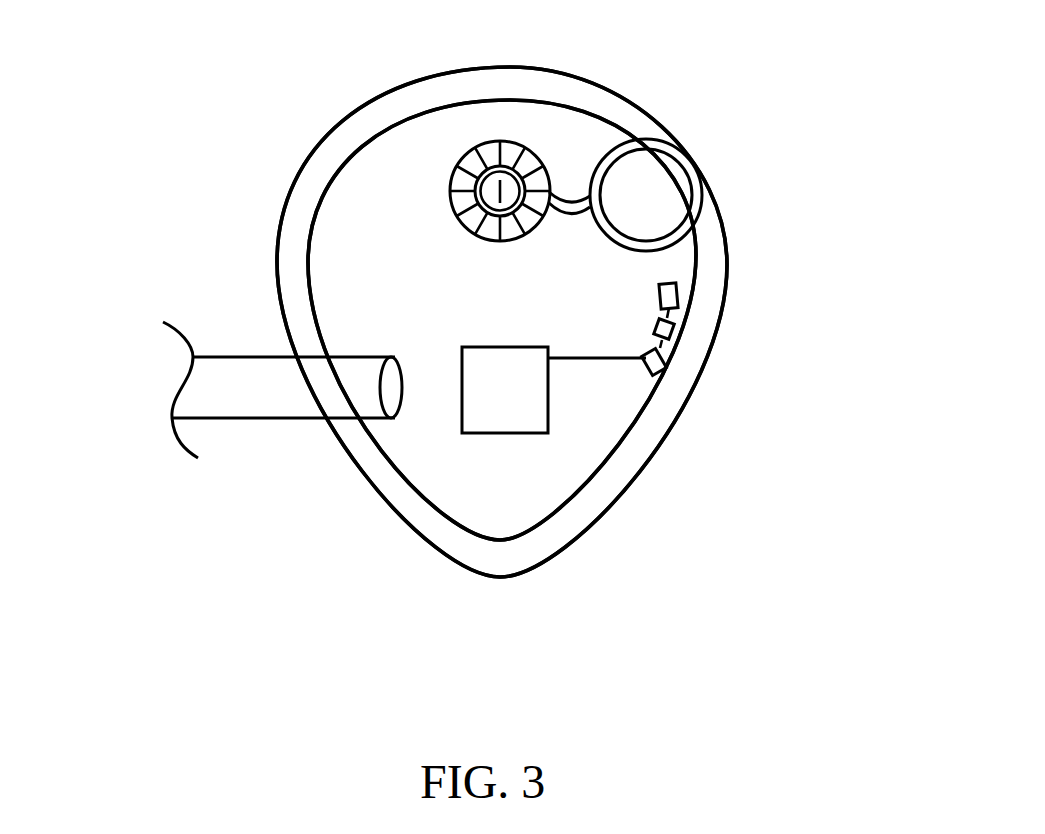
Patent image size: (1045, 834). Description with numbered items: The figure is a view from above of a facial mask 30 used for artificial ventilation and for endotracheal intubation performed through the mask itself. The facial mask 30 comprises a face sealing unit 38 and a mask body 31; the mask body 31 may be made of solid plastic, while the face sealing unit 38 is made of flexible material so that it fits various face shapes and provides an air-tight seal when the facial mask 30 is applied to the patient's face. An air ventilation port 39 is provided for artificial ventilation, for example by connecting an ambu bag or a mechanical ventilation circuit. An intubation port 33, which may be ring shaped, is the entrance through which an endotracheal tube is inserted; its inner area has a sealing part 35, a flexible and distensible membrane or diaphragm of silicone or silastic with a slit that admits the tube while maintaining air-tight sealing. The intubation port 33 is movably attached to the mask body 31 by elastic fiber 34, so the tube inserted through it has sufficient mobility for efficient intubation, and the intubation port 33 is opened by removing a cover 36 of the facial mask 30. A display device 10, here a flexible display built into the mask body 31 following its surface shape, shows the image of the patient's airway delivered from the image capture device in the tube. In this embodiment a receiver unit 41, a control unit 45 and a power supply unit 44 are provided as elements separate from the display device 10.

The display device 10 is at (505, 390).
The facial mask 30 is at (622, 563).
The mask body 31 is at (498, 455).
The intubation port 33 is at (477, 218).
The elastic fiber 34 is at (540, 173).
The sealing part 35 is at (488, 192).
The cover 36 is at (645, 195).
The face sealing unit 38 is at (708, 257).
The air ventilation port 39 is at (272, 397).
The receiver unit 41 is at (677, 332).
The power supply unit 44 is at (678, 297).
The control unit 45 is at (667, 370).